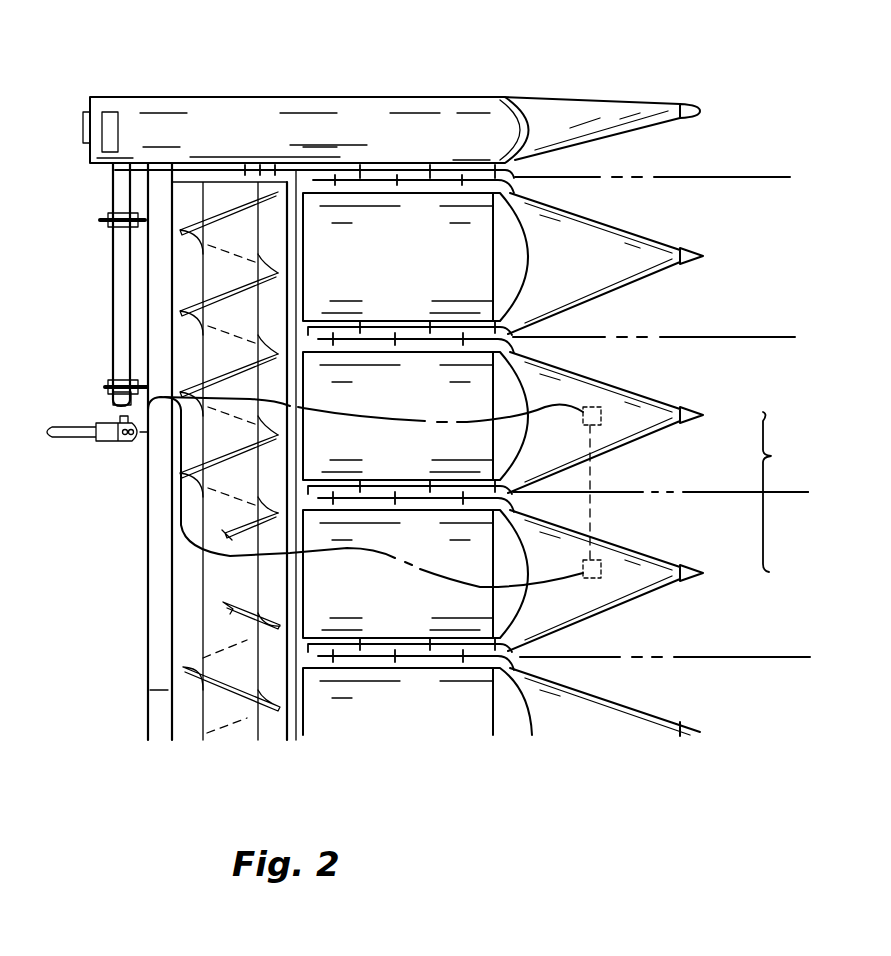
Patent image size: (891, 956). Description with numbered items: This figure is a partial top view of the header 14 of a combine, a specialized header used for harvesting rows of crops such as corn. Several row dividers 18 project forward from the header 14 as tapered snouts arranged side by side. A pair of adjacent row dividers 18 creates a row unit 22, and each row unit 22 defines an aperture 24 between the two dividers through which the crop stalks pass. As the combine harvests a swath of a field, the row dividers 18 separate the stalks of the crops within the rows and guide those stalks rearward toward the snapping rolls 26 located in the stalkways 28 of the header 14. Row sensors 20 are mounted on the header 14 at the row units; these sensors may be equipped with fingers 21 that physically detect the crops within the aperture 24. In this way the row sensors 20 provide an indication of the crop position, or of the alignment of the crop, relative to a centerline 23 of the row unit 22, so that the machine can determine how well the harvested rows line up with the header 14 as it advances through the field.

The header 14 is at (612, 90).
The row dividers 18 is at (585, 242).
The row sensors 20 is at (597, 406).
The fingers 21 is at (590, 468).
The row unit 22 is at (785, 492).
The centerline 23 is at (790, 492).
The aperture 24 is at (675, 472).
The snapping rolls 26 is at (414, 348).
The stalkways 28 is at (518, 325).